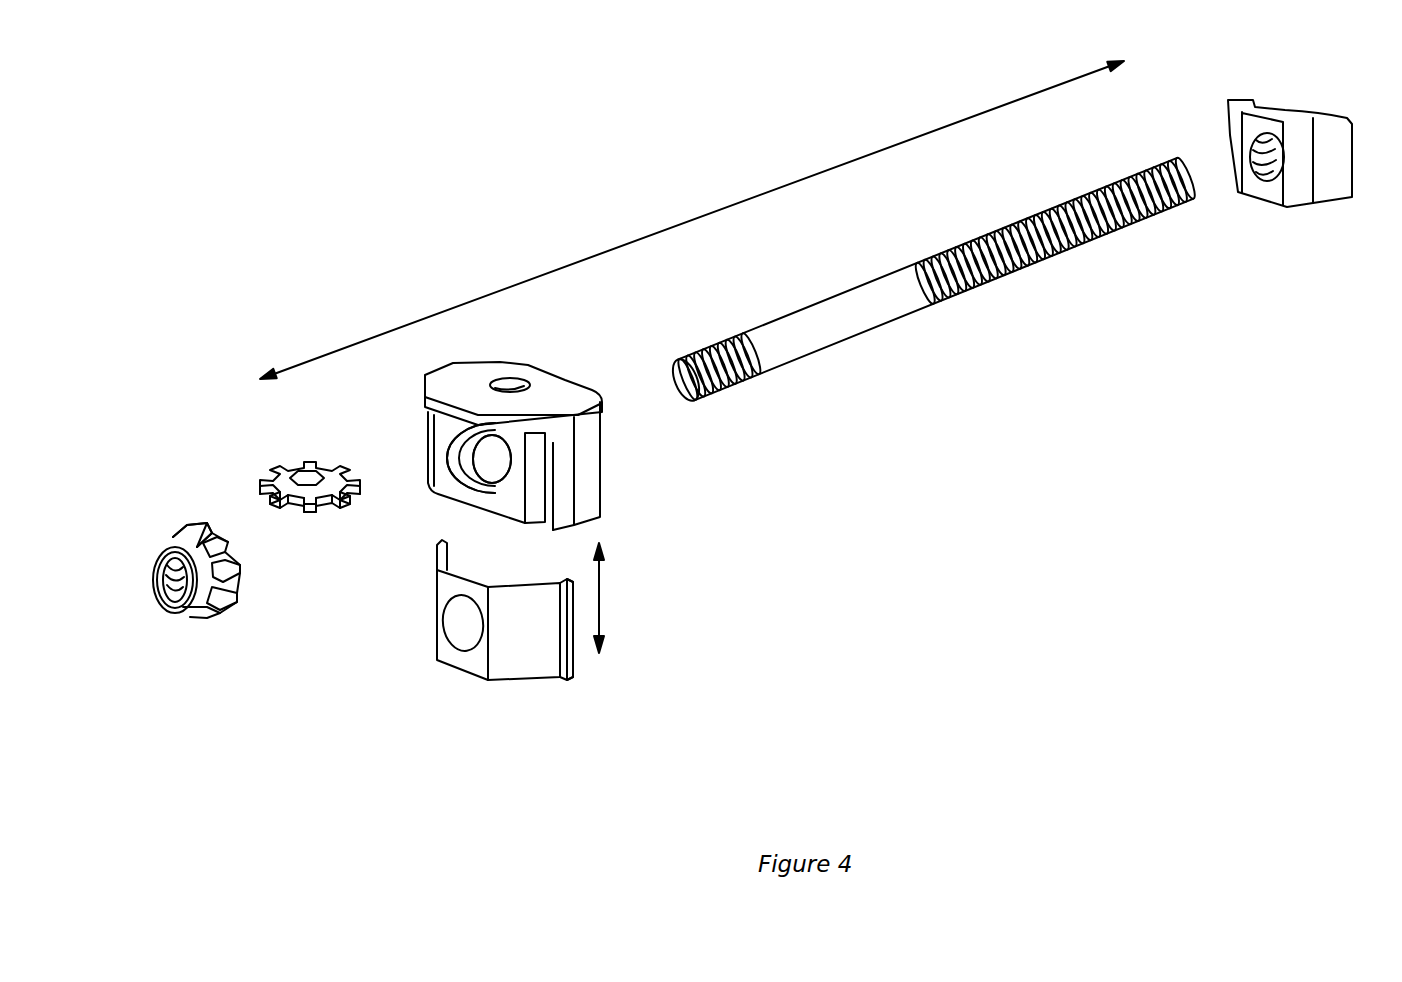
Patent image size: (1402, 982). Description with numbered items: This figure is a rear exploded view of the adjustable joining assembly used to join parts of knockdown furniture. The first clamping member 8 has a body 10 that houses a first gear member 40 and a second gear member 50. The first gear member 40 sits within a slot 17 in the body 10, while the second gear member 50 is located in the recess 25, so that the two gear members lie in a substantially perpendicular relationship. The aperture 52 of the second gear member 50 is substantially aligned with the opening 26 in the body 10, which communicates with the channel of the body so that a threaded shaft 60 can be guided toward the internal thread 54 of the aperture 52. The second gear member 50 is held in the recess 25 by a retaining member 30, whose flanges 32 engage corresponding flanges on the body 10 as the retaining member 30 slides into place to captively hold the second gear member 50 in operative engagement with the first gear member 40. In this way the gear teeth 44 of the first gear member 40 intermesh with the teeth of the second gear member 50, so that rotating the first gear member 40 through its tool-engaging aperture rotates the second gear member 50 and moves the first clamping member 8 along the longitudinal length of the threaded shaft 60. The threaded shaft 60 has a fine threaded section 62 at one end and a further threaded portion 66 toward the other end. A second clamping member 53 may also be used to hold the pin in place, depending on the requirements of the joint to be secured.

The first clamping member 8 is at (632, 446).
The body 10 is at (516, 451).
The slot 17 is at (512, 437).
The recess 25 is at (465, 448).
The opening 26 is at (497, 463).
The retaining member 30 is at (563, 654).
The flanges 32 is at (577, 657).
The first gear member 40 is at (290, 445).
The gear teeth 44 is at (352, 472).
The second gear member 50 is at (155, 601).
The aperture 52 is at (153, 585).
The internal thread 54 is at (173, 613).
The second clamping member 53 is at (1332, 182).
The threaded shaft 60 is at (953, 330).
The fine threaded section 62 is at (747, 388).
The second threaded portion 66 is at (1090, 250).